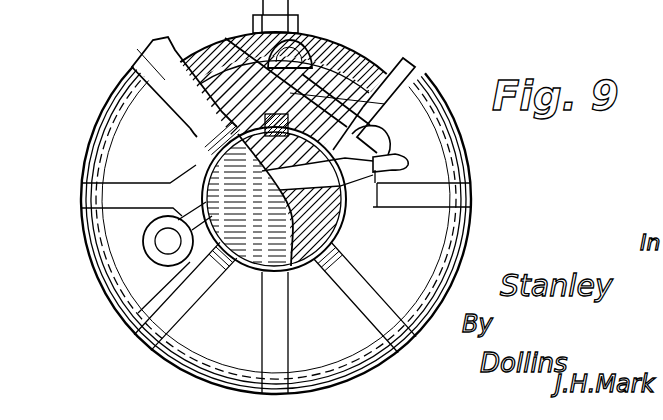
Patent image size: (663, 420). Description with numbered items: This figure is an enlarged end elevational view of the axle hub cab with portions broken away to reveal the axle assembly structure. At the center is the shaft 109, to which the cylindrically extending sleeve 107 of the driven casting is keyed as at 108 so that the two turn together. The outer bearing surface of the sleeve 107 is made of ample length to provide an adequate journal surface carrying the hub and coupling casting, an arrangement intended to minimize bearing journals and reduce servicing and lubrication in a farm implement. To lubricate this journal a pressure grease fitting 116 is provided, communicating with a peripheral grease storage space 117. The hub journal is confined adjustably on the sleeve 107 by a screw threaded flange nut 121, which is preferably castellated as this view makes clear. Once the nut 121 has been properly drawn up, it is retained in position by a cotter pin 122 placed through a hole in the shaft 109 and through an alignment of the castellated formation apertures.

The sleeve 107 is at (415, 92).
The key 108 is at (237, 130).
The shaft 109 is at (373, 237).
The pressure grease fitting 116 is at (291, 12).
The peripheral grease storage space 117 is at (321, 46).
The flange nut 121 is at (160, 93).
The cotter pin 122 is at (143, 246).